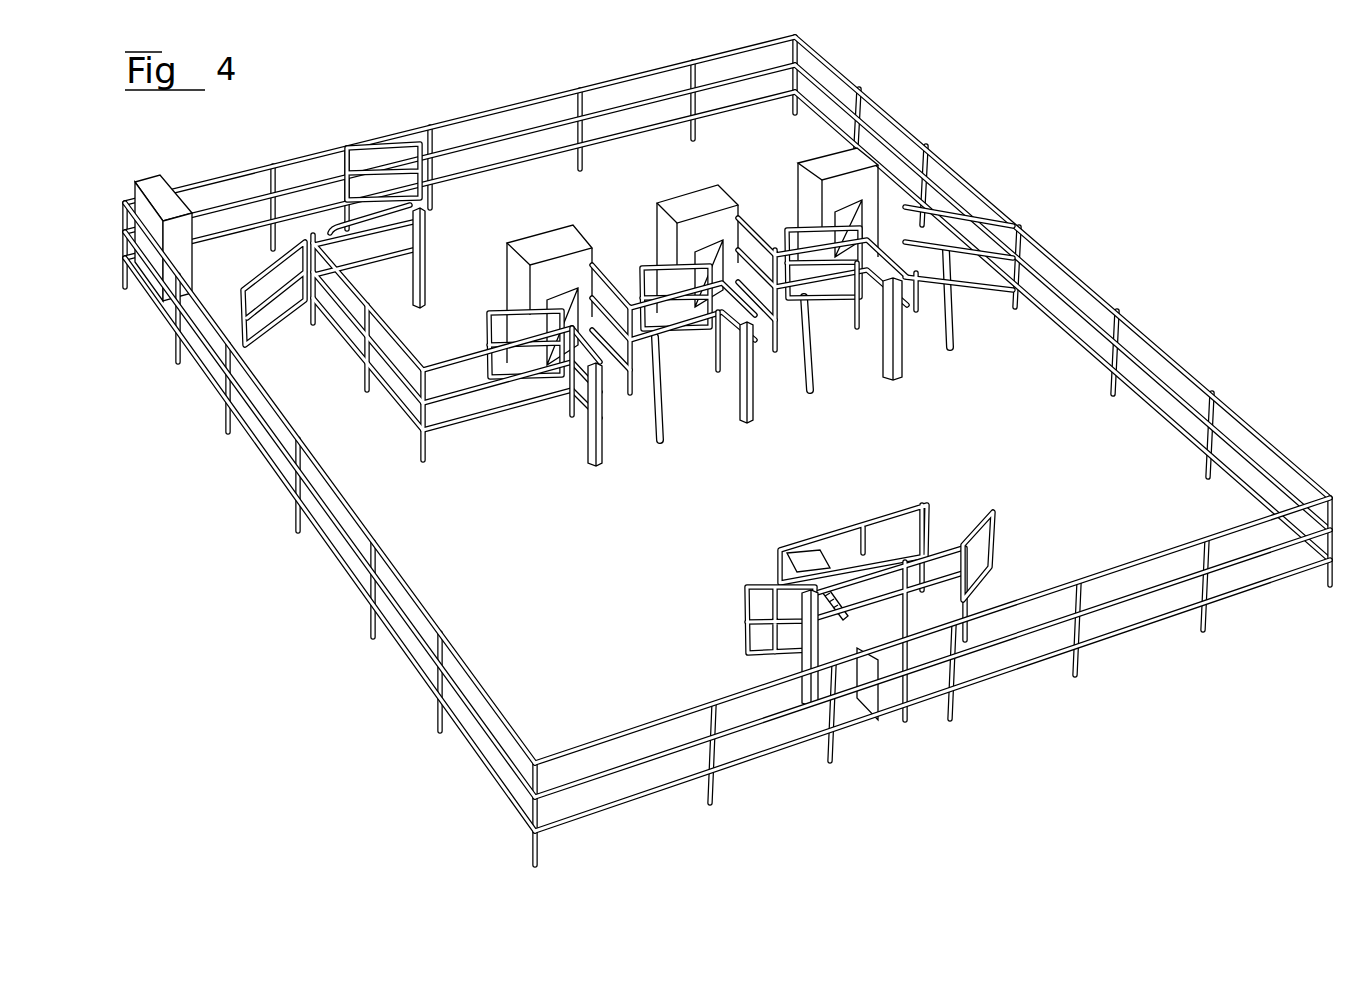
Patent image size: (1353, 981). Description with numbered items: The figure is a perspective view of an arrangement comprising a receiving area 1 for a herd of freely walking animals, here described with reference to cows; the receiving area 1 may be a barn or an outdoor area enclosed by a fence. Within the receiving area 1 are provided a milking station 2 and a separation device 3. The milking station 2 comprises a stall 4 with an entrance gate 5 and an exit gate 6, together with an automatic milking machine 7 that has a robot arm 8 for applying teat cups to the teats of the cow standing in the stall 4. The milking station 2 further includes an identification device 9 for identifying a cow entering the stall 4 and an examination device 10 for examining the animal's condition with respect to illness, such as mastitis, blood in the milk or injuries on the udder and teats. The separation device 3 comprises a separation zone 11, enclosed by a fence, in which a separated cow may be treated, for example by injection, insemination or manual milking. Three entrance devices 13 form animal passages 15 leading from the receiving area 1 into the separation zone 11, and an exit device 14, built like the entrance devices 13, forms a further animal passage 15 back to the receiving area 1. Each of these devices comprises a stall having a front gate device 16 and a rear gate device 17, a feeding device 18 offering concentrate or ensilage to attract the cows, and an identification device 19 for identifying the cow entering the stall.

The receiving area 1 is at (703, 552).
The milking station 2 is at (893, 500).
The separation device 3 is at (395, 415).
The stall 4 is at (925, 618).
The entrance gate 5 is at (745, 620).
The exit gate 6 is at (1000, 525).
The automatic milking machine 7 is at (795, 555).
The robot arm 8 is at (832, 587).
The identification device 9 is at (802, 660).
The examination device 10 is at (870, 705).
The separation zone 11 is at (470, 302).
The entrance device 13 is at (572, 415).
The exit device 14 is at (327, 230).
The animal passage 15 is at (265, 265).
The front gate device 16 is at (275, 342).
The rear gate device 17 is at (362, 148).
The feeding device 18 is at (192, 270).
The identification device 19 is at (428, 240).